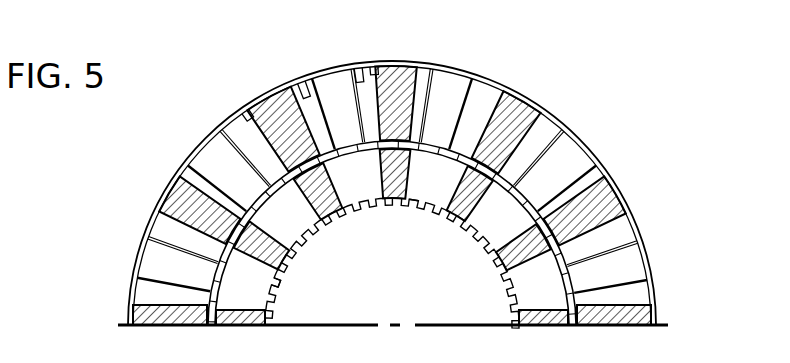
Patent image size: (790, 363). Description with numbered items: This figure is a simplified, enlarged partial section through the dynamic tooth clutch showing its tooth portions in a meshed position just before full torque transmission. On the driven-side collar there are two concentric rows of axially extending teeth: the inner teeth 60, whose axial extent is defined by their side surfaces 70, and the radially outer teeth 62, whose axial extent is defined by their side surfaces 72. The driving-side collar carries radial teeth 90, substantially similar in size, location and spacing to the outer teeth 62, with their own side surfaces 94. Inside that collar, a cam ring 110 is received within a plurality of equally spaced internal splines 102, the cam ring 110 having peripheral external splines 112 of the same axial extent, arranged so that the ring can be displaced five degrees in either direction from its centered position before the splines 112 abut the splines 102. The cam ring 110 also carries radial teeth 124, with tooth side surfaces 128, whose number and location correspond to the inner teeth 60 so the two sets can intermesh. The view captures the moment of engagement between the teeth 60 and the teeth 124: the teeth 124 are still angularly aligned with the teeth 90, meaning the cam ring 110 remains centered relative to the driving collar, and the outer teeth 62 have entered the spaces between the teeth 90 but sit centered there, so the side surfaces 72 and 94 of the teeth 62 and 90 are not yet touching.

The outer teeth 62 is at (263, 110).
The side surfaces 72 is at (246, 111).
The side surfaces 94 is at (303, 86).
The radial teeth 90 is at (333, 88).
The external splines 112 is at (481, 86).
The radial teeth 124 is at (360, 180).
The side surfaces 70 is at (391, 172).
The tooth side surfaces 128 is at (409, 170).
The internal splines 102 is at (480, 222).
The inner teeth 60 is at (320, 206).
The cam ring 110 is at (279, 292).